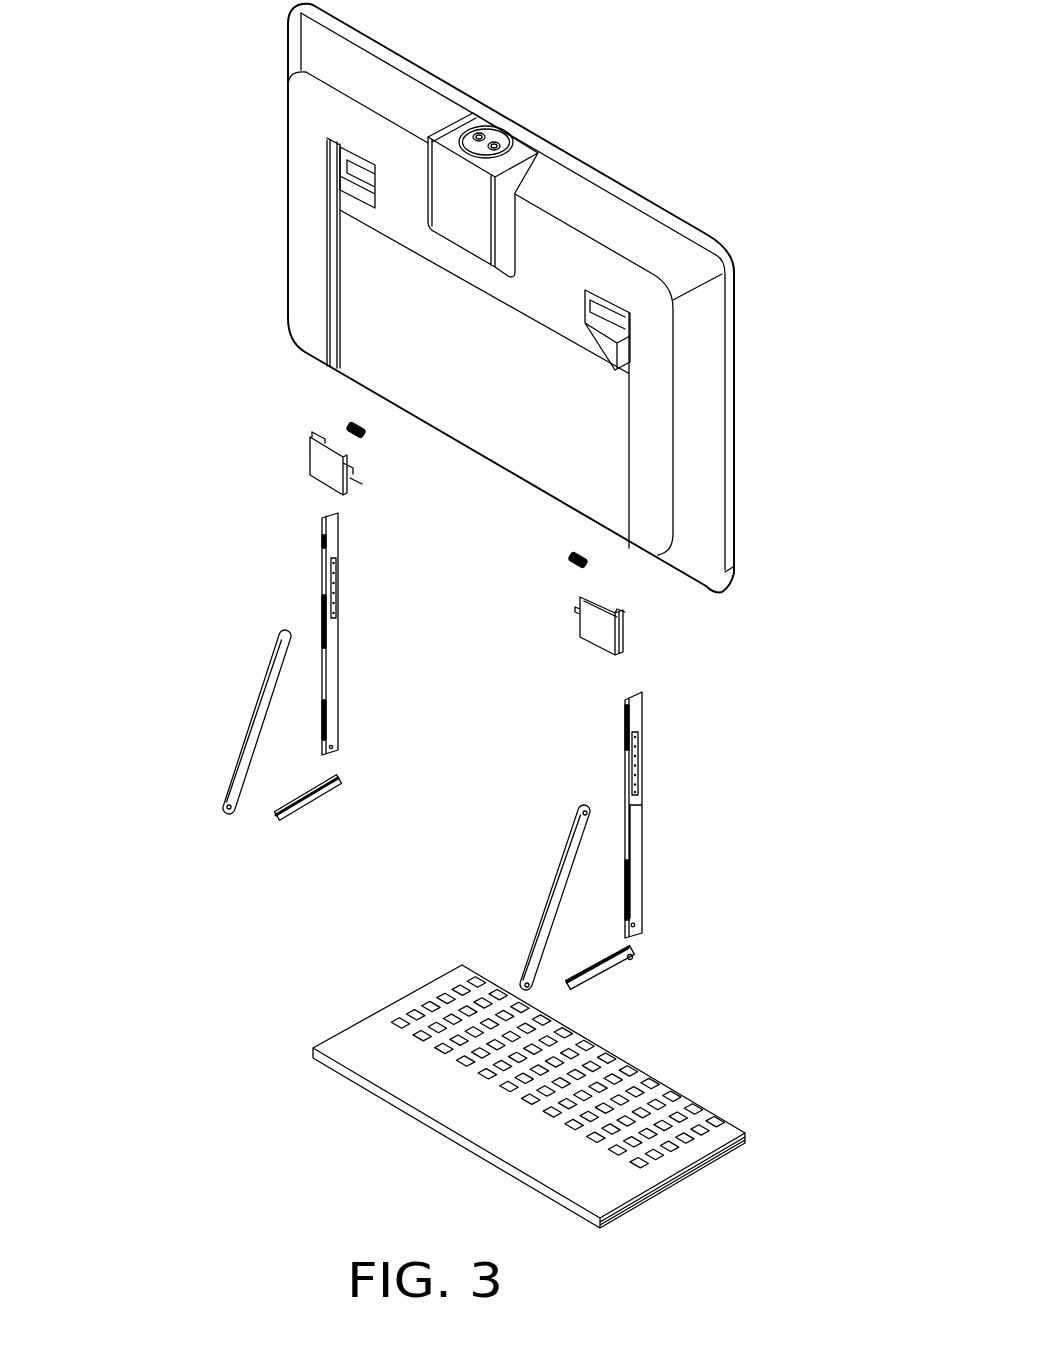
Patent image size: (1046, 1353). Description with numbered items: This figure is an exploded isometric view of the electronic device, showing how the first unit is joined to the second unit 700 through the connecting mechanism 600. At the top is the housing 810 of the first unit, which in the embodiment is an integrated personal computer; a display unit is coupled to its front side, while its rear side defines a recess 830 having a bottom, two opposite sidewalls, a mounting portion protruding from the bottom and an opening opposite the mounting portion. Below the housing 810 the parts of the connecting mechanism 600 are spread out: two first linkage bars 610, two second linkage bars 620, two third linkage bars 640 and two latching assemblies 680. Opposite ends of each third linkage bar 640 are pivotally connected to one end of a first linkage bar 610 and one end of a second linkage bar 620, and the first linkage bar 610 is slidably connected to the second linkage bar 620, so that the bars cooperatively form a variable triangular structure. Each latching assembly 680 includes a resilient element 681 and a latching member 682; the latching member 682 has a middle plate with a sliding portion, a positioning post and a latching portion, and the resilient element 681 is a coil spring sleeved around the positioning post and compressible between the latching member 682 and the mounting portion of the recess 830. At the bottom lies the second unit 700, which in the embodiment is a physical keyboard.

The connecting mechanism 600 is at (210, 658).
The first linkage bar 610 is at (560, 880).
The second linkage bar 620 is at (640, 718).
The third linkage bar 640 is at (602, 972).
The latching assembly 680 is at (467, 557).
The resilient element 681 is at (567, 561).
The latching member 682 is at (593, 626).
The second unit 700 is at (368, 1042).
The housing 810 is at (580, 197).
The recess 830 is at (542, 425).